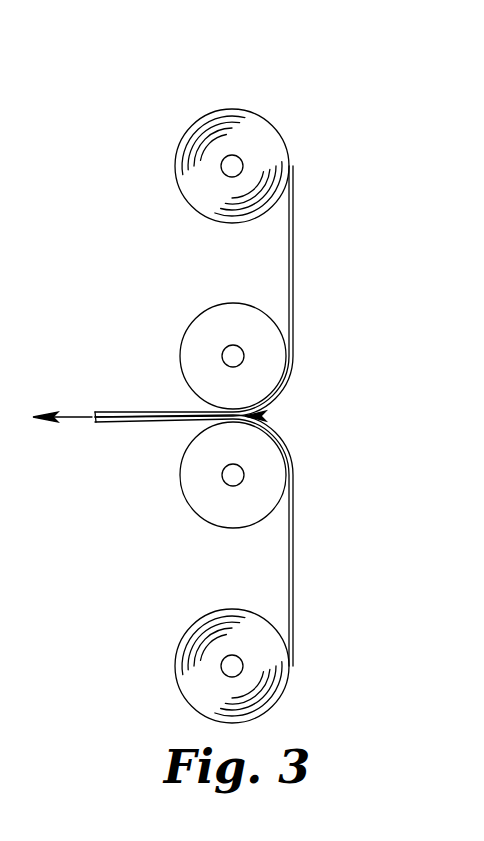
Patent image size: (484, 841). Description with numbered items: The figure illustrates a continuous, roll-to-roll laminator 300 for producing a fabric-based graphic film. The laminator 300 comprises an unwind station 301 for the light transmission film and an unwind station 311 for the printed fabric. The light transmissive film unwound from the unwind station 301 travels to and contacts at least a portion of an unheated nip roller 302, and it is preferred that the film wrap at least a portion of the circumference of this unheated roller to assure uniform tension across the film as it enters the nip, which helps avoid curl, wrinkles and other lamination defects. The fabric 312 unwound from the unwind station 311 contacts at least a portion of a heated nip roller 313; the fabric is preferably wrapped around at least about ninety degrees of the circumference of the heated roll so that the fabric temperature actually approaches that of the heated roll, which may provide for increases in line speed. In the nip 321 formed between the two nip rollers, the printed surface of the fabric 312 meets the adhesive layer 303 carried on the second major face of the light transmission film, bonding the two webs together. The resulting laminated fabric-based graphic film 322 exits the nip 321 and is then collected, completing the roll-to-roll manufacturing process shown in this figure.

The roll-to-roll laminator 300 is at (332, 118).
The unwind station for the light transmission film 301 is at (205, 115).
The unheated nip roller 302 is at (192, 333).
The adhesive layer 303 is at (293, 253).
The unwind station for the printed fabric 311 is at (195, 697).
The fabric 312 is at (293, 568).
The heated nip roller 313 is at (202, 506).
The nip 321 is at (262, 416).
The laminated fabric-based graphic film 322 is at (119, 409).